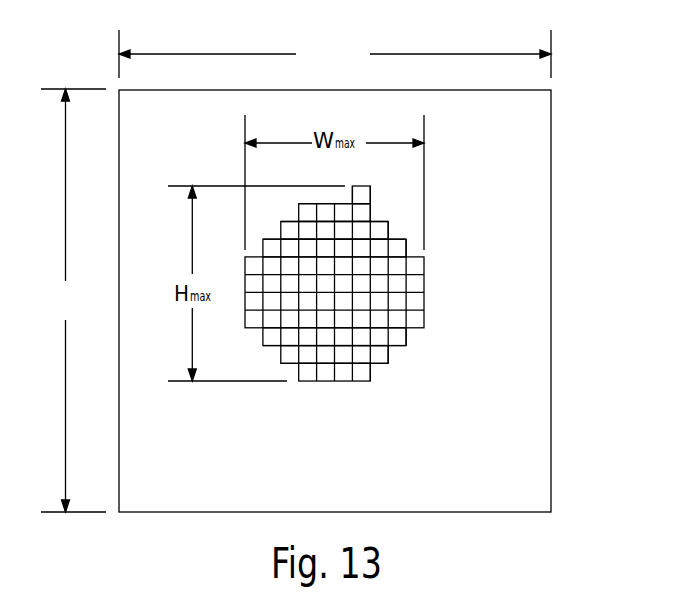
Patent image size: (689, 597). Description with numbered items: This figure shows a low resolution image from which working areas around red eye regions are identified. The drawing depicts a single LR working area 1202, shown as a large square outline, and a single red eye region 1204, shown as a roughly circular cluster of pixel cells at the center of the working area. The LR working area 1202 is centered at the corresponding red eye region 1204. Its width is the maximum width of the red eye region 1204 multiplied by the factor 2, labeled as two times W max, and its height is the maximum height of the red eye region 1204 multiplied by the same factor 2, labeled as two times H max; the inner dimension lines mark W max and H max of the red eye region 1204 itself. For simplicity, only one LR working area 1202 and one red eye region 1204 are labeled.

The LR working area 1202 is at (551, 158).
The red eye region 1204 is at (424, 288).
The dimension annotations 2*Wmax and 2*Hmax 2 is at (294, 271).